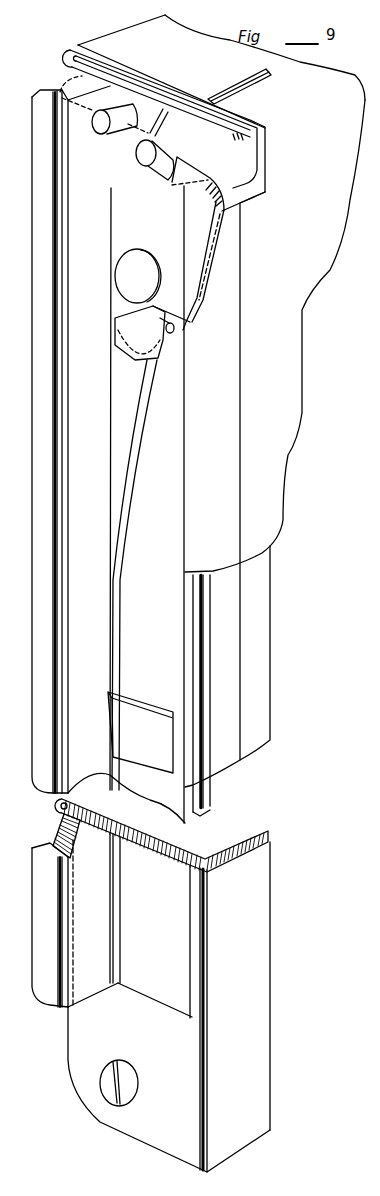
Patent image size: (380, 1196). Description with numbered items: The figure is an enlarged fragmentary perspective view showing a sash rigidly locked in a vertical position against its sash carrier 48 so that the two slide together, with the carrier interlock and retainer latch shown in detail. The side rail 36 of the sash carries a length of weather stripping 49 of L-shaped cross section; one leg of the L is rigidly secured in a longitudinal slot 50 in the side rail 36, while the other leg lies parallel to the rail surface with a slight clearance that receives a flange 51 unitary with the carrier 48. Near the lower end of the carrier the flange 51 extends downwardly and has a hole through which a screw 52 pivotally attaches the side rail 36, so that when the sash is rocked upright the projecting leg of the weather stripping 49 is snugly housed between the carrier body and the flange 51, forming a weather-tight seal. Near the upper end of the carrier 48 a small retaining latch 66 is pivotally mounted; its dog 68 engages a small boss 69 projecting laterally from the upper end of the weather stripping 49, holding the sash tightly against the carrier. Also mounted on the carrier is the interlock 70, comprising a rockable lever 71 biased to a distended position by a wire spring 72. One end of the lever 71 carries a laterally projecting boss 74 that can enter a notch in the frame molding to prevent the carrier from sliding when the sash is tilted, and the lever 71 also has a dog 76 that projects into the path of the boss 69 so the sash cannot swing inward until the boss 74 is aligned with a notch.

The side rail 36 is at (299, 320).
The sash carrier 48 is at (108, 985).
The weather stripping 49 is at (236, 762).
The longitudinal slot 50 is at (246, 82).
The flange 51 is at (183, 840).
The screw 52 is at (110, 1100).
The retaining latch 66 is at (268, 150).
The dog 68 is at (182, 186).
The boss 69 is at (140, 165).
The interlock 70 is at (205, 289).
The rockable lever 71 is at (203, 268).
The wire spring 72 is at (134, 430).
The boss 74 is at (98, 126).
The dog 76 is at (196, 171).